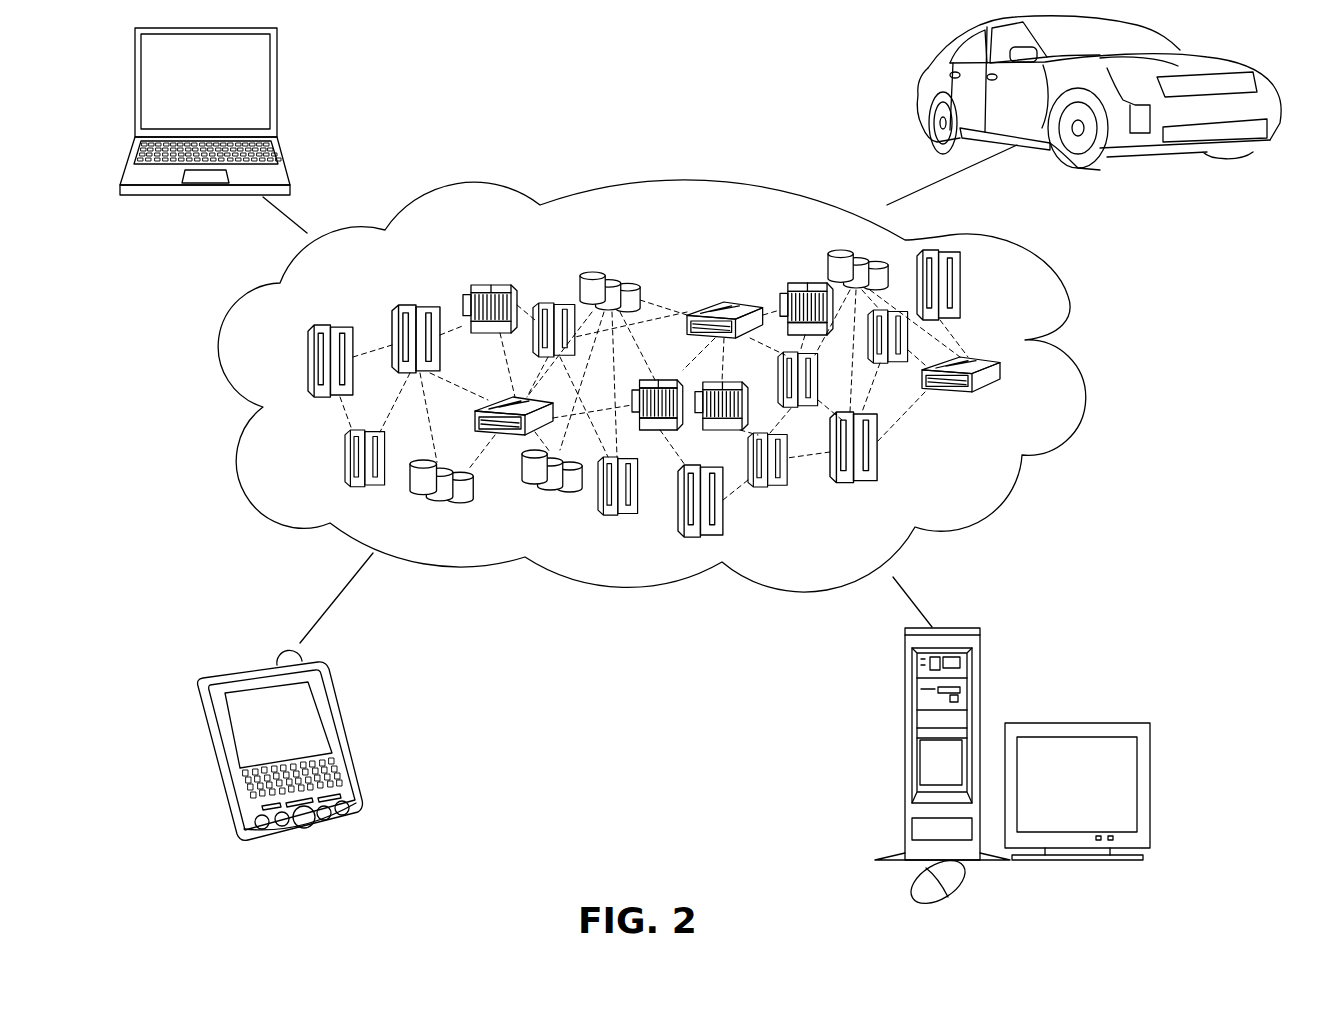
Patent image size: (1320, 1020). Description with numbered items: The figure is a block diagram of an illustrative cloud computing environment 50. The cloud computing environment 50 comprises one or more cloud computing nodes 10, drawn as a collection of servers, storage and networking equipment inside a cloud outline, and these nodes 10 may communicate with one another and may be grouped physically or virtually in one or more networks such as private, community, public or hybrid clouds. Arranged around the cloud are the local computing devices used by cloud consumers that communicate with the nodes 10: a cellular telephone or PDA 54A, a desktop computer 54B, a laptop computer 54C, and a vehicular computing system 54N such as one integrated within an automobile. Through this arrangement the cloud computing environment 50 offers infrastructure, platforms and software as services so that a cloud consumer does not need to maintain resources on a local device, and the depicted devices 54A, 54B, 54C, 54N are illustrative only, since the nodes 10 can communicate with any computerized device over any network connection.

The cloud computing node 10 is at (978, 473).
The cloud computing environment 50 is at (1073, 372).
The cellular telephone or PDA 54A is at (333, 705).
The desktop computer 54B is at (903, 690).
The laptop computer 54C is at (278, 57).
The vehicular computing system 54N is at (922, 84).